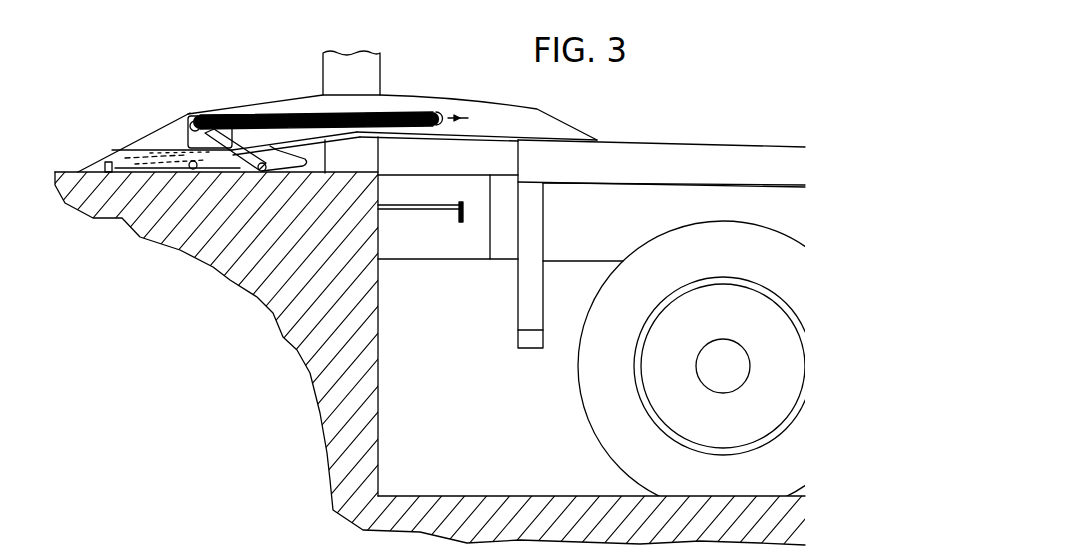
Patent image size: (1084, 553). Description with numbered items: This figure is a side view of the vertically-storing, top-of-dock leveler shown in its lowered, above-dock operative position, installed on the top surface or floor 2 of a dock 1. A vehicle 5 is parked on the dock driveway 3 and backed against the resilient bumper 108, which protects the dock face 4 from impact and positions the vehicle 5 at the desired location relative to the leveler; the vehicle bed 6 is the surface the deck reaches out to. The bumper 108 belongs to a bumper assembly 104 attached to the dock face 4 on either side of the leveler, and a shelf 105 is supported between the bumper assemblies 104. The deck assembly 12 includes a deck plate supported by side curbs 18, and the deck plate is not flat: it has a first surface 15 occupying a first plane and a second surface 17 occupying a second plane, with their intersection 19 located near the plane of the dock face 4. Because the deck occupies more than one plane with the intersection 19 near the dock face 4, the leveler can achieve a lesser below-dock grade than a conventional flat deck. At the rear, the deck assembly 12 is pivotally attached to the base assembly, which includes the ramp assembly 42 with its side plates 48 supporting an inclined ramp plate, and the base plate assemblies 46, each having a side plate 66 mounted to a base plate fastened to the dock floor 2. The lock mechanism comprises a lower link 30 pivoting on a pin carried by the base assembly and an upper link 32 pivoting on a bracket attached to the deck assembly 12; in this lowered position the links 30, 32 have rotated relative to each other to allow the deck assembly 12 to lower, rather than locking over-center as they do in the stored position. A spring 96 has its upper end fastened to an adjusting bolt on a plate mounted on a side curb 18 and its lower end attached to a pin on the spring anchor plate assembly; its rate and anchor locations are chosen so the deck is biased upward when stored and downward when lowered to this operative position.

The dock 1 is at (147, 232).
The top surface (or floor) of the dock 2 is at (77, 172).
The dock driveway 3 is at (503, 495).
The dock face 4 is at (378, 361).
The vehicle 5 is at (766, 126).
The vehicle floor panel 6 is at (700, 142).
The deck assembly 12 is at (406, 68).
The first surface 15 is at (496, 139).
The second surface 17 is at (358, 138).
The side curb 18 is at (270, 92).
The intersection 19 is at (382, 136).
The lower link 30 is at (273, 172).
The upper link 32 is at (287, 173).
The ramp assembly 42 is at (176, 117).
The base plate assembly 46 is at (118, 178).
The side plate 48 is at (137, 140).
The side plate 66 is at (157, 147).
The spring 96 is at (413, 112).
The bumper assembly 104 is at (448, 200).
The shelf 105 is at (432, 208).
The resilient bumper 108 is at (505, 260).